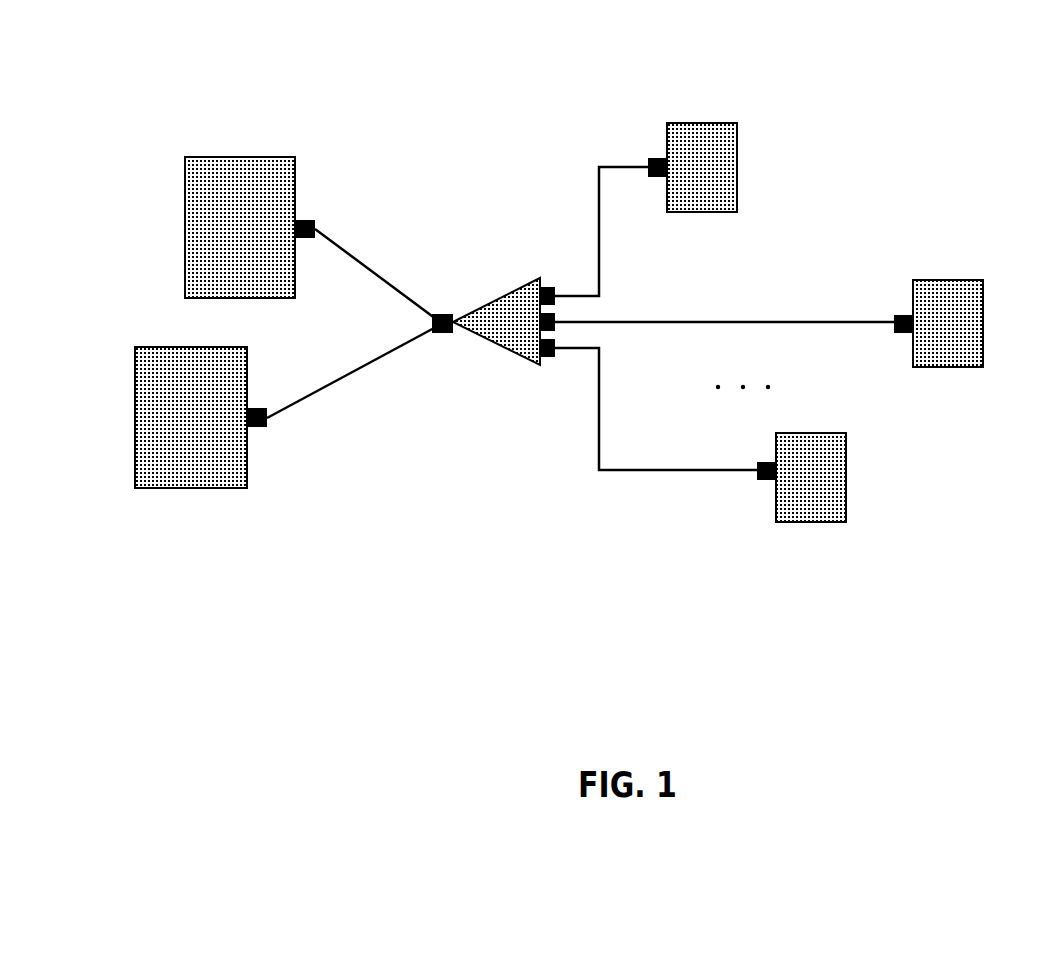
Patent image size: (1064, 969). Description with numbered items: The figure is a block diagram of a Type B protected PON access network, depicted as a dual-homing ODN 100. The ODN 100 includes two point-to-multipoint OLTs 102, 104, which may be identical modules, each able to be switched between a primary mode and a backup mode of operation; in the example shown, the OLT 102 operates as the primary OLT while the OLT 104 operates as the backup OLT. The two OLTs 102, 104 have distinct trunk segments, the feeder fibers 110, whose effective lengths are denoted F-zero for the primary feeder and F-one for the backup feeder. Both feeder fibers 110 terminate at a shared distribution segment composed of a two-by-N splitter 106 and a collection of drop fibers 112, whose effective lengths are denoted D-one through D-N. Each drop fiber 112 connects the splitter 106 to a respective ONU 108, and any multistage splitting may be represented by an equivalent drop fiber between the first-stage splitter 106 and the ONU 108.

The ODN 100 is at (565, 40).
The primary OLT 102 is at (250, 227).
The backup OLT 104 is at (201, 417).
The 2×N splitter 106 is at (493, 348).
The ONU 108 is at (839, 322).
The feeder fiber 110 is at (404, 293).
The drop fiber 112 is at (601, 277).